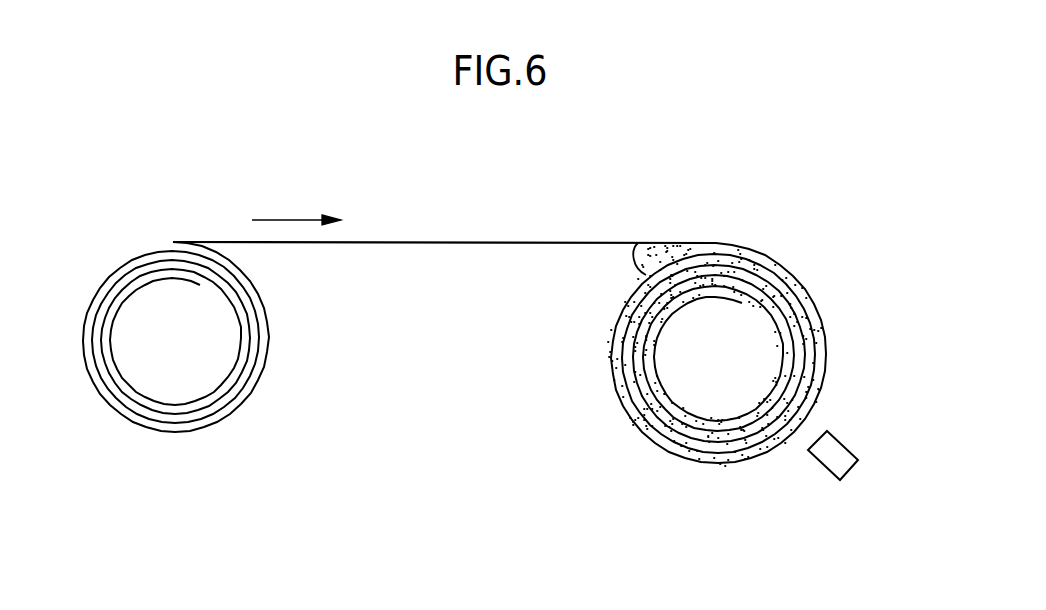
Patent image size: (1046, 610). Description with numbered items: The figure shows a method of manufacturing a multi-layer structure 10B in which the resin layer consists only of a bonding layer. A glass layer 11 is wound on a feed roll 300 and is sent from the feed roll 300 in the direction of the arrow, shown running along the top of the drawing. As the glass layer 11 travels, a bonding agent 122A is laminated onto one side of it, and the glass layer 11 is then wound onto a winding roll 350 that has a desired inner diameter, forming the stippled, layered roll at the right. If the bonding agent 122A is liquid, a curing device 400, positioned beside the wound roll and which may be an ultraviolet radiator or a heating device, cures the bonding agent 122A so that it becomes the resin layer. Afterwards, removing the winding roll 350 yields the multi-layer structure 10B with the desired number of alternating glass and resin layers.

The glass layer 11 is at (425, 241).
The feed roll 300 is at (172, 355).
The multi-layer structure 10B is at (604, 394).
The winding roll 350 is at (715, 380).
The bonding agent 122A is at (637, 261).
The curing device 400 is at (852, 472).